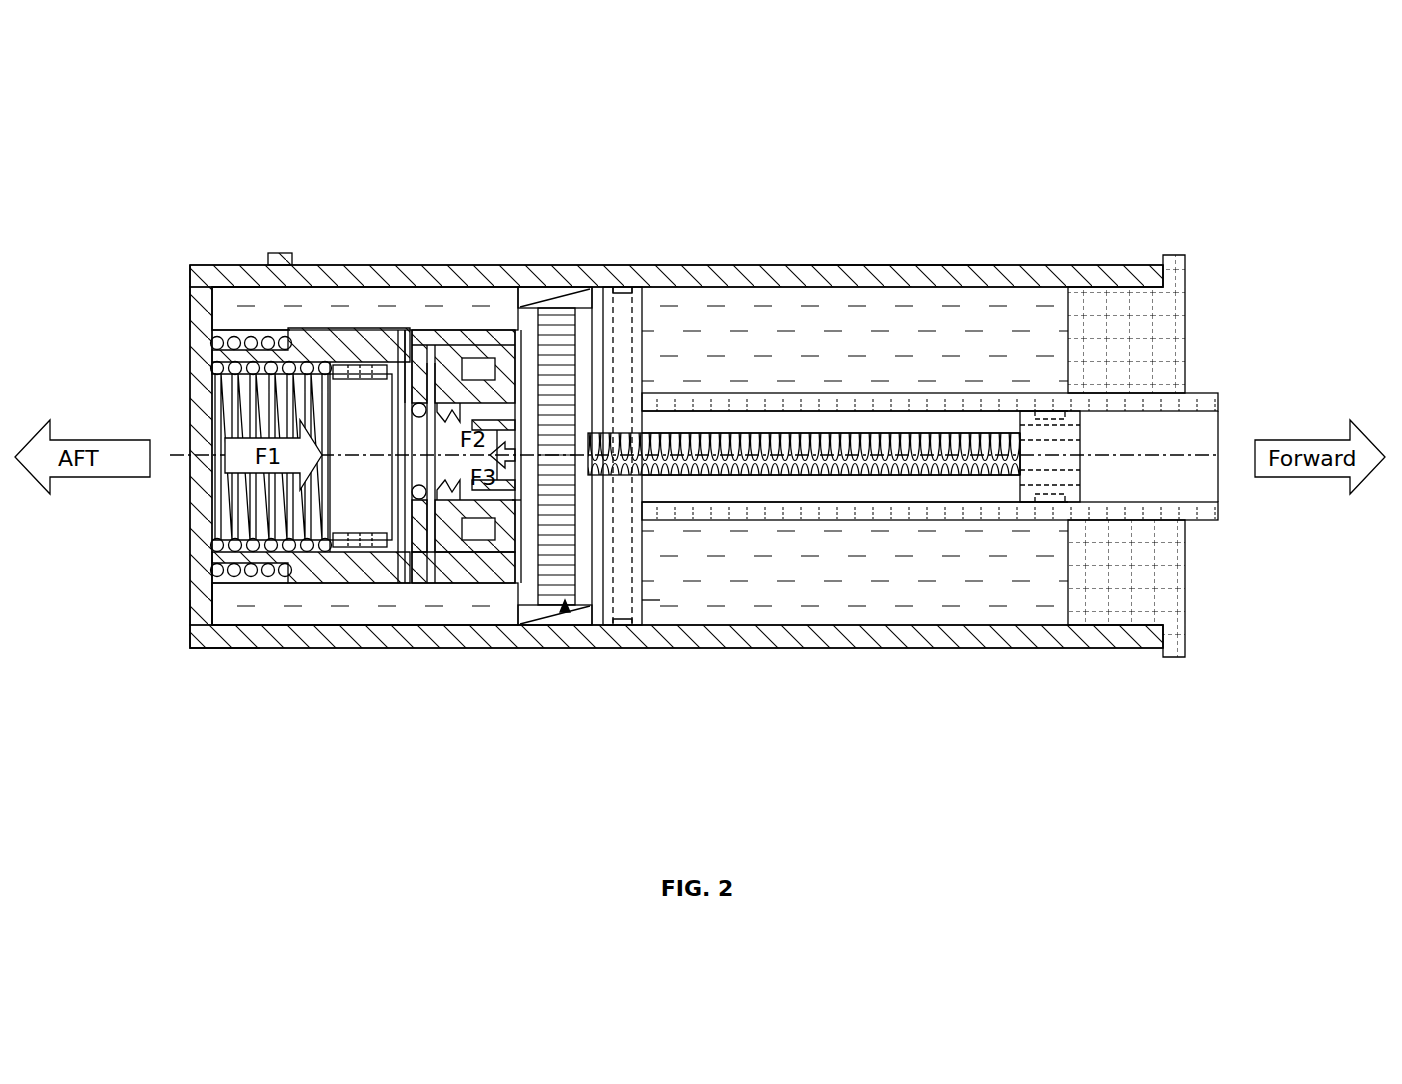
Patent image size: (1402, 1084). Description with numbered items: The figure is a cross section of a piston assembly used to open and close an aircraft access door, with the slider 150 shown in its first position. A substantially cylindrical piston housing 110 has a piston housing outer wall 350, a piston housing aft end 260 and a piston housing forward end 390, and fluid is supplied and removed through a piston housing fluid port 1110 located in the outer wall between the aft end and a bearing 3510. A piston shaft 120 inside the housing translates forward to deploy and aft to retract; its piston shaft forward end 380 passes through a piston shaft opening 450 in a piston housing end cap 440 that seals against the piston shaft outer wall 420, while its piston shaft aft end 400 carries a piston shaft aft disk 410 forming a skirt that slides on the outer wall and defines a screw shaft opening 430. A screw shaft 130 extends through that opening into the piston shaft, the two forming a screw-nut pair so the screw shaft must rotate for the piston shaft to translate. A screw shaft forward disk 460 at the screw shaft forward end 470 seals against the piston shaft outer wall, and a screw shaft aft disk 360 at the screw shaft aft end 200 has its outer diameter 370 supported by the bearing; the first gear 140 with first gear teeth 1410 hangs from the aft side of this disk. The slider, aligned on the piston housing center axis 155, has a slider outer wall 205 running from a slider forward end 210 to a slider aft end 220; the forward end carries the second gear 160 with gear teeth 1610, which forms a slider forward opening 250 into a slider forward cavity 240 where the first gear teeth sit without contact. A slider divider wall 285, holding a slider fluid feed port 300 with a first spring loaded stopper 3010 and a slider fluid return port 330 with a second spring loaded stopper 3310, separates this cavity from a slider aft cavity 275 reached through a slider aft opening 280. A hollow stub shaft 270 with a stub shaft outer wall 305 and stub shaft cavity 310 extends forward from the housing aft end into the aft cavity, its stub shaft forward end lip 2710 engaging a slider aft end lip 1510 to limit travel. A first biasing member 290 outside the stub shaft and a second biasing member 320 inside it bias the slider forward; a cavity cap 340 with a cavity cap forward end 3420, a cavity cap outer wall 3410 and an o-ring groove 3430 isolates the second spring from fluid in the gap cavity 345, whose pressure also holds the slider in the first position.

The piston housing 110 is at (745, 648).
The piston shaft 120 is at (930, 508).
The screw shaft 130 is at (945, 436).
The first gear 140 is at (498, 560).
The slider 150 is at (368, 328).
The piston housing center axis 155 is at (1190, 445).
The second gear 160 is at (515, 525).
The screw shaft aft end 200 is at (600, 478).
The slider outer wall 205 is at (345, 628).
The slider forward end 210 is at (518, 325).
The slider aft end 220 is at (200, 280).
The slider forward cavity 240 is at (495, 345).
The slider forward opening 250 is at (562, 388).
The piston housing aft end 260 is at (200, 636).
The stub shaft 270 is at (240, 320).
The slider aft cavity 275 is at (398, 560).
The slider aft opening 280 is at (262, 575).
The slider divider wall 285 is at (412, 335).
The first biasing member 290 is at (245, 585).
The slider fluid feed port 300 is at (428, 552).
The stub shaft outer wall 305 is at (225, 567).
The stub shaft cavity 310 is at (222, 545).
The second biasing member 320 is at (225, 405).
The slider fluid return port 330 is at (452, 358).
The cavity cap 340 is at (235, 345).
The gap cavity 345 is at (361, 457).
The piston housing outer wall 350 is at (862, 280).
The screw shaft aft disk 360 is at (612, 400).
The outer diameter 370 is at (578, 615).
The piston shaft forward end 380 is at (1200, 518).
The piston housing forward end 390 is at (1158, 655).
The piston shaft aft end 400 is at (650, 560).
The piston shaft aft disk 410 is at (650, 593).
The piston shaft outer wall 420 is at (878, 522).
The screw shaft opening 430 is at (605, 430).
The piston housing end cap 440 is at (1158, 350).
The piston shaft opening 450 is at (1205, 395).
The screw shaft forward disk 460 is at (1045, 430).
The screw shaft forward end 470 is at (1007, 505).
The piston housing fluid port 1110 is at (260, 285).
The first gear teeth 1410 is at (478, 580).
The slider aft end lip 1510 is at (245, 285).
The gear teeth 1610 is at (560, 625).
The stub shaft forward end lip 2710 is at (300, 288).
The first spring loaded stopper 3010 is at (452, 585).
The second spring loaded stopper 3310 is at (437, 380).
The cavity cap outer wall 3410 is at (350, 588).
The cavity cap forward end 3420 is at (362, 550).
The o-ring groove 3430 is at (345, 358).
The bearing 3510 is at (578, 300).